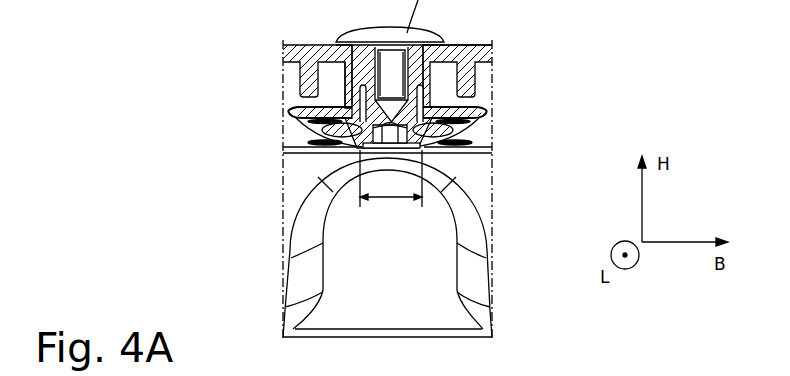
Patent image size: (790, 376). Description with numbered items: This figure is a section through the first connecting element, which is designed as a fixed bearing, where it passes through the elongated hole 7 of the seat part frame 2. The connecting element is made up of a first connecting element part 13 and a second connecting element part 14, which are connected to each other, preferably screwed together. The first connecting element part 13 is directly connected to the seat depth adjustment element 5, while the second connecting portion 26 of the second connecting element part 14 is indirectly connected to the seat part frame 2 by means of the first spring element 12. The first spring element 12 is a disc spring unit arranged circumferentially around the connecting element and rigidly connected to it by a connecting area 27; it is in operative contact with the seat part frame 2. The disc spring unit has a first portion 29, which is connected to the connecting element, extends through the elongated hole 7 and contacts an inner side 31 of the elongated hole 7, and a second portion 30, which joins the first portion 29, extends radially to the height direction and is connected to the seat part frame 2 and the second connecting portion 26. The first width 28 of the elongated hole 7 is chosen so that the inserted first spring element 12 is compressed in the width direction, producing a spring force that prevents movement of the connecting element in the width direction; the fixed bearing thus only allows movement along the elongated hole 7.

The seat part frame 2 is at (485, 195).
The seat depth adjustment element 5 is at (288, 47).
The elongated hole 7 is at (302, 10).
The first spring element 12 is at (447, 47).
The first connecting element part 13 is at (390, 58).
The second connecting element part 14 is at (453, 130).
The second connecting portion 26 is at (332, 133).
The connecting area 27 is at (414, 105).
The first width 28 is at (390, 205).
The first portion 29 is at (362, 110).
The second portion 30 is at (296, 112).
The inner side 31 is at (347, 103).